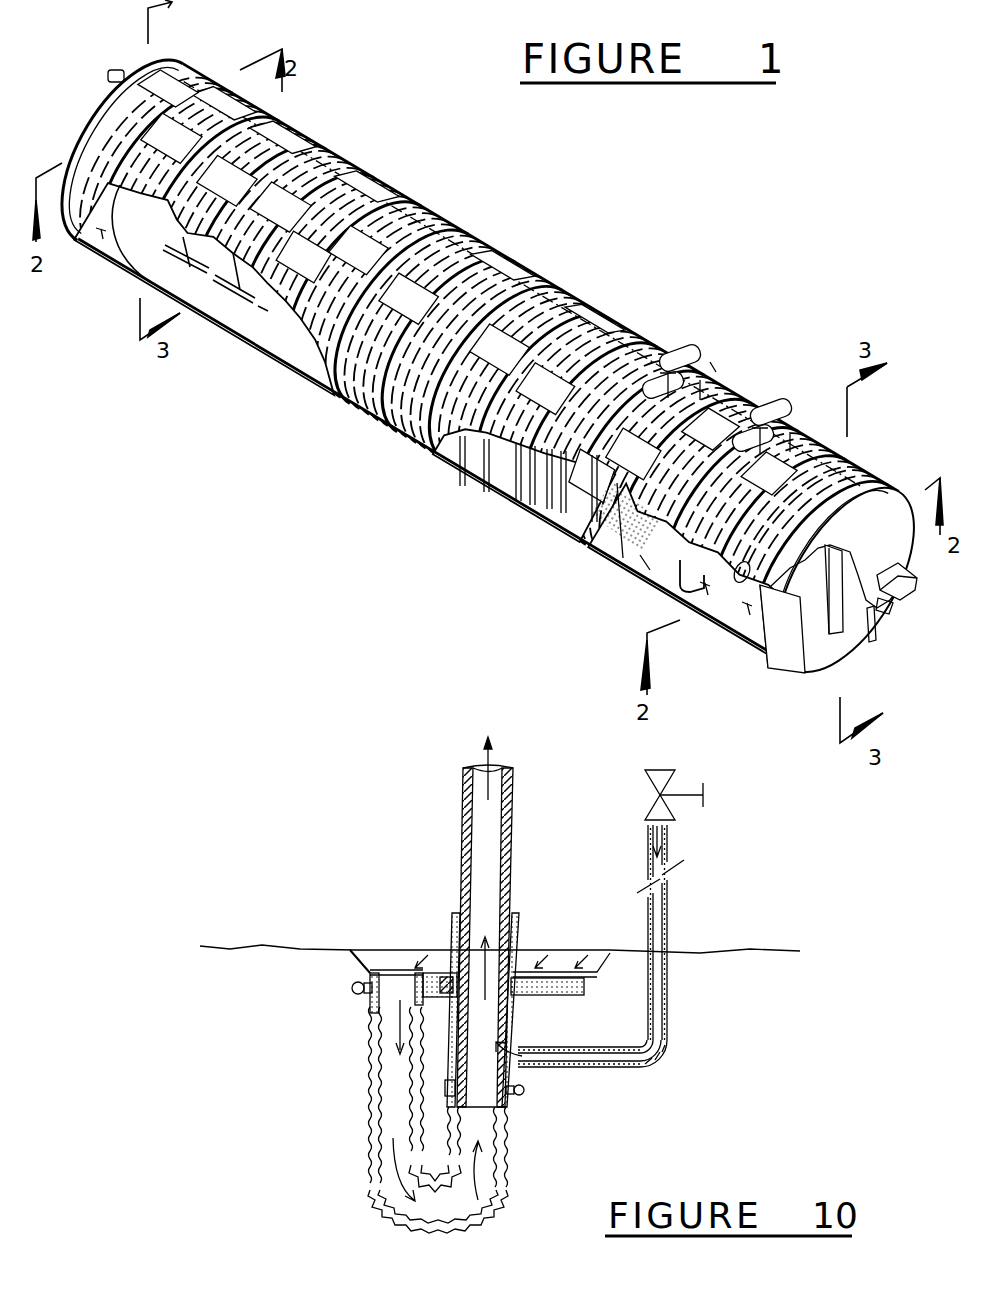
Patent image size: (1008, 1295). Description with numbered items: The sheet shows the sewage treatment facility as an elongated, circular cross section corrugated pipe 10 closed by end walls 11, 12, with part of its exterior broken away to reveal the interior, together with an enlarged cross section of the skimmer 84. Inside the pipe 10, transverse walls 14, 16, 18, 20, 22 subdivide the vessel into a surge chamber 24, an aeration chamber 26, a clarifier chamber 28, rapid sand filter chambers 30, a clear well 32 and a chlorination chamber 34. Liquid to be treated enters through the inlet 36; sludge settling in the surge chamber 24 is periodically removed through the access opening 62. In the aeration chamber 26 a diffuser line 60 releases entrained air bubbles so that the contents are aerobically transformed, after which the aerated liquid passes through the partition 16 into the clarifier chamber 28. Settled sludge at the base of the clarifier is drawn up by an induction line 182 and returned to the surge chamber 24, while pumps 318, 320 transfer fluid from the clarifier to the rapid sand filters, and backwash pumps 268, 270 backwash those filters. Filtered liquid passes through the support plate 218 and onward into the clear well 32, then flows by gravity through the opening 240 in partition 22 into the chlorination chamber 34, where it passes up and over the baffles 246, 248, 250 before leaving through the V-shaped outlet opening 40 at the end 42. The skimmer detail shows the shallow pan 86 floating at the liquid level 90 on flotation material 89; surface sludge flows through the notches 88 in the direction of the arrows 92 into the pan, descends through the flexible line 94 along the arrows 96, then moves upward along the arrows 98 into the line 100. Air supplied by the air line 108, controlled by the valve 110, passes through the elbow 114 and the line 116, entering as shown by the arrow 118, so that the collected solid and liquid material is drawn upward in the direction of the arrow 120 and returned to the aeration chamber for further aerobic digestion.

In FIG. 1, the corrugated pipe 10 is at (496, 225).
In FIG. 1, the end wall 11 is at (100, 115).
In FIG. 1, the end wall 12 is at (887, 517).
In FIG. 1, the transverse wall 14 is at (122, 262).
In FIG. 1, the transverse wall 16 is at (480, 462).
In FIG. 1, the transverse wall 18 is at (630, 556).
In FIG. 1, the transverse wall 20 is at (685, 581).
In FIG. 1, the transverse wall 22 is at (740, 598).
In FIG. 1, the surge chamber 24 is at (100, 236).
In FIG. 1, the aeration chamber 26 is at (248, 322).
In FIG. 1, the clarifier chamber 28 is at (530, 497).
In FIG. 1, the rapid sand filter chambers 30 is at (645, 566).
In FIG. 1, the clear well 32 is at (705, 586).
In FIG. 1, the chlorination chamber 34 is at (835, 650).
In FIG. 1, the inlet 36 is at (120, 72).
In FIG. 1, the outlet opening 40 is at (905, 588).
In FIG. 1, the end 42 is at (882, 601).
In FIG. 1, the diffuser line 60 is at (215, 283).
In FIG. 1, the access opening 62 is at (178, 70).
In FIG. 1, the induction line 182 is at (565, 508).
In FIG. 1, the support plate 218 is at (608, 541).
In FIG. 1, the opening 240 is at (748, 608).
In FIG. 1, the baffle 246 is at (777, 662).
In FIG. 1, the baffle 248 is at (830, 650).
In FIG. 1, the baffle 250 is at (880, 616).
In FIG. 1, the backwash pump 268 is at (776, 412).
In FIG. 1, the backwash pump 270 is at (746, 421).
In FIG. 1, the pump 318 is at (692, 362).
In FIG. 1, the pump 320 is at (667, 366).
In FIG. 10, the skimmer 84 is at (437, 858).
In FIG. 10, the shallow pan 86 is at (368, 975).
In FIG. 10, the notches 88 is at (383, 962).
In FIG. 10, the flotation material 89 is at (573, 992).
In FIG. 10, the liquid level 90 is at (246, 945).
In FIG. 10, the arrows 92 is at (400, 963).
In FIG. 10, the flexible line 94 is at (370, 1078).
In FIG. 10, the arrows 96 is at (392, 1174).
In FIG. 10, the arrows 98 is at (498, 1172).
In FIG. 10, the line 100 is at (512, 820).
In FIG. 10, the air line 108 is at (675, 920).
In FIG. 10, the valve 110 is at (648, 779).
In FIG. 10, the elbow 114 is at (668, 1060).
In FIG. 10, the line 116 is at (583, 1070).
In FIG. 10, the arrow 118 is at (506, 1049).
In FIG. 10, the arrow 120 is at (498, 749).